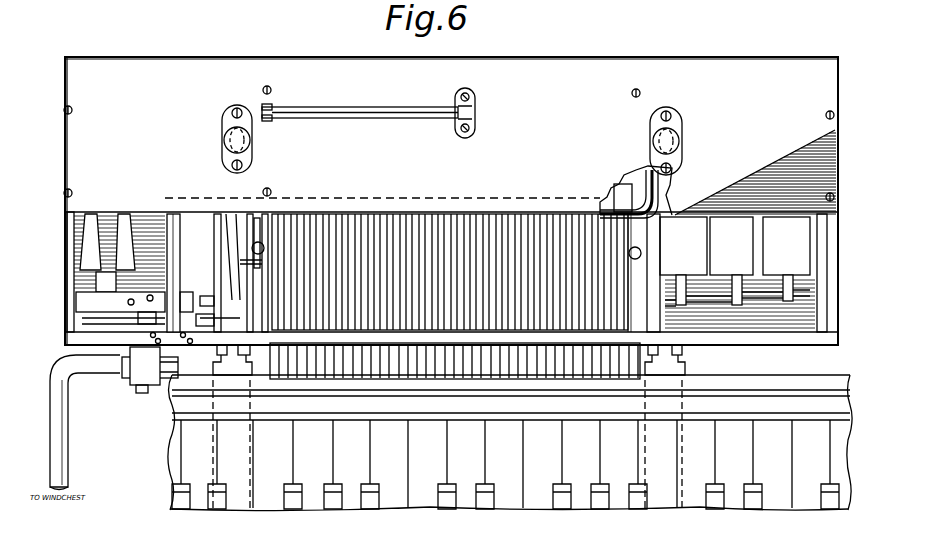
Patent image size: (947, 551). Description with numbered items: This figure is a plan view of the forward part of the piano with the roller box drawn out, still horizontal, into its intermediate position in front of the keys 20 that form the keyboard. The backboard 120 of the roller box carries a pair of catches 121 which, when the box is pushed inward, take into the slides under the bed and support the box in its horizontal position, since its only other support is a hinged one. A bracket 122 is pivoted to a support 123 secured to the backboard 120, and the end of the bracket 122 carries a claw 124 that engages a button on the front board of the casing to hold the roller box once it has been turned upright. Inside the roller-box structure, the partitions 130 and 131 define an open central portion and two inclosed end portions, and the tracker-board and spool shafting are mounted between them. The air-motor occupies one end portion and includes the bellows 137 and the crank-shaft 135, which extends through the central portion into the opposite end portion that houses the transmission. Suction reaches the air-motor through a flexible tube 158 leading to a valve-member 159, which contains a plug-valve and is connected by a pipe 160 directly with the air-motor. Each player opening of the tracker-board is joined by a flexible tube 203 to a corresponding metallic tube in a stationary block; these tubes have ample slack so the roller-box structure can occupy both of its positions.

The keys 20 is at (425, 500).
The backboard 120 is at (608, 74).
The catches 121 is at (250, 147).
The bracket 122 is at (368, 119).
The support 123 is at (476, 97).
The claw 124 is at (265, 105).
The partition 130 is at (658, 207).
The partition 131 is at (268, 222).
The crank-shaft 135 is at (716, 302).
The bellows 137 is at (795, 258).
The flexible tube 158 is at (70, 468).
The valve-member 159 is at (142, 380).
The pipe 160 is at (166, 222).
The flexible tube 203 is at (445, 226).